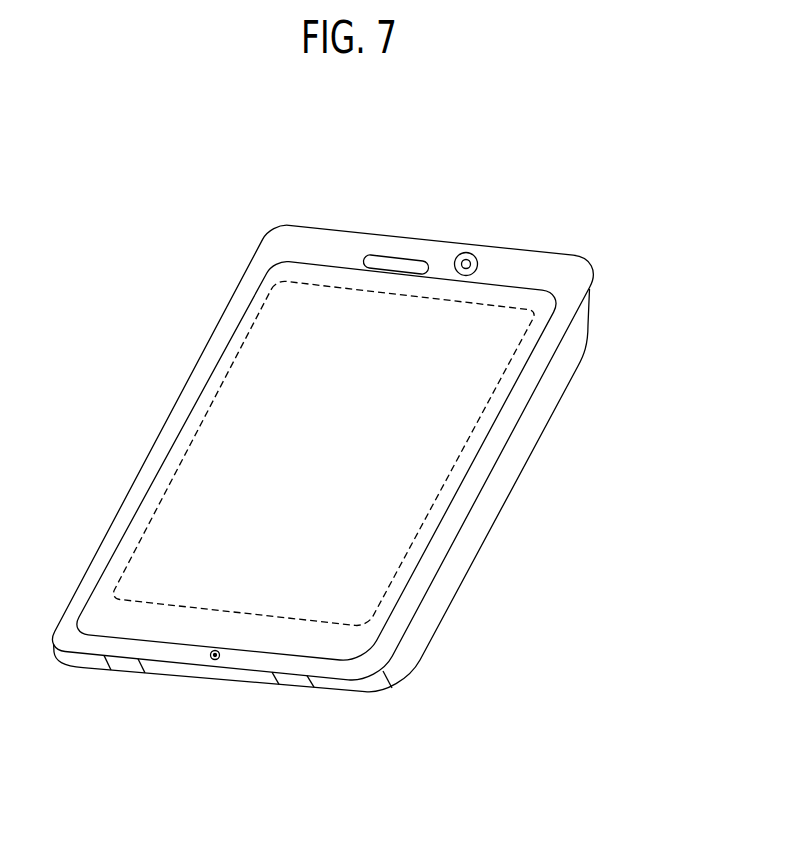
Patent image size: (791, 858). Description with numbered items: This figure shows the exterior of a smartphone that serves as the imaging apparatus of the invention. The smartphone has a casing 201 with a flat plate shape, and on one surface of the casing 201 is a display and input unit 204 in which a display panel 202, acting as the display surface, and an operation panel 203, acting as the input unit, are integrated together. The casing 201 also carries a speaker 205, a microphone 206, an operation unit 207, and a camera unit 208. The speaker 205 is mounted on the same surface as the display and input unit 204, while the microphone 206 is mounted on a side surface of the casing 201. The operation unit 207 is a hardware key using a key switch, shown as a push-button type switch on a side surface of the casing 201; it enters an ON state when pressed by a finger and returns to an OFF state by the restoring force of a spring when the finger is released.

The casing 201 is at (271, 242).
The display panel 202 is at (498, 305).
The operation panel 203 is at (558, 257).
The display and input unit 204 is at (637, 171).
The speaker 205 is at (398, 257).
The microphone 206 is at (213, 660).
The operation unit 207 is at (132, 670).
The camera unit 208 is at (464, 253).